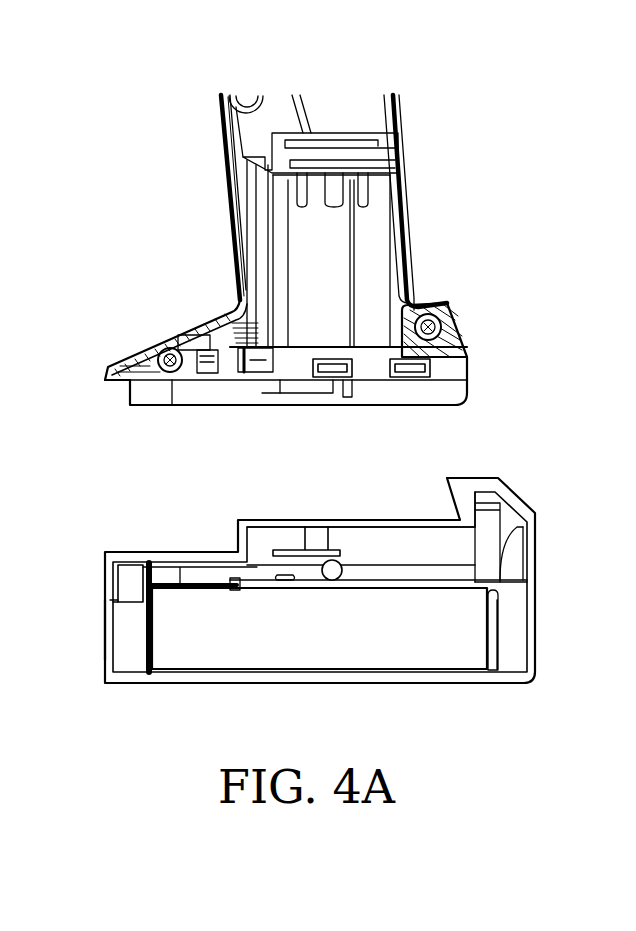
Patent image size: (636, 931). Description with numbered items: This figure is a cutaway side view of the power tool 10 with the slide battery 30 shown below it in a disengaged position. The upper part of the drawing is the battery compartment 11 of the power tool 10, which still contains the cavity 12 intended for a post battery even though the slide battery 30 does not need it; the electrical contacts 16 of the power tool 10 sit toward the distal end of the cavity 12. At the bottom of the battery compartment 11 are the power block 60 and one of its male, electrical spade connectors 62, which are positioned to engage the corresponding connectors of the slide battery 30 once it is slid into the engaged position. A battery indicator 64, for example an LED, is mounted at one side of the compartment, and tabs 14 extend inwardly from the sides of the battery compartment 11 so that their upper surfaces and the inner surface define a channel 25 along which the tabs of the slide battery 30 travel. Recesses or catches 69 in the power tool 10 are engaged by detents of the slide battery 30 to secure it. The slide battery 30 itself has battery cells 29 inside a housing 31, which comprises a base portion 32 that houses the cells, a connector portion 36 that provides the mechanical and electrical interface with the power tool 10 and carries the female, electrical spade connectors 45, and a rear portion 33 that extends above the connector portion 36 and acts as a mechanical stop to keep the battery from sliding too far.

The power tool 10 is at (187, 182).
The battery compartment 11 is at (122, 432).
The cavity 12 is at (330, 281).
The tabs 14 is at (352, 382).
The electrical contacts 16 is at (355, 192).
The channel 25 is at (490, 360).
The battery cells 29 is at (319, 628).
The slide battery 30 is at (536, 432).
The housing 31 is at (146, 555).
The base portion 32 is at (106, 630).
The rear portion 33 is at (520, 500).
The connector portion 36 is at (355, 522).
The female electrical spade connectors 45 is at (285, 540).
The power block 60 is at (218, 363).
The male electrical spade connectors 62 is at (258, 368).
The battery indicator 64 is at (132, 338).
The recesses or catches 69 is at (292, 389).